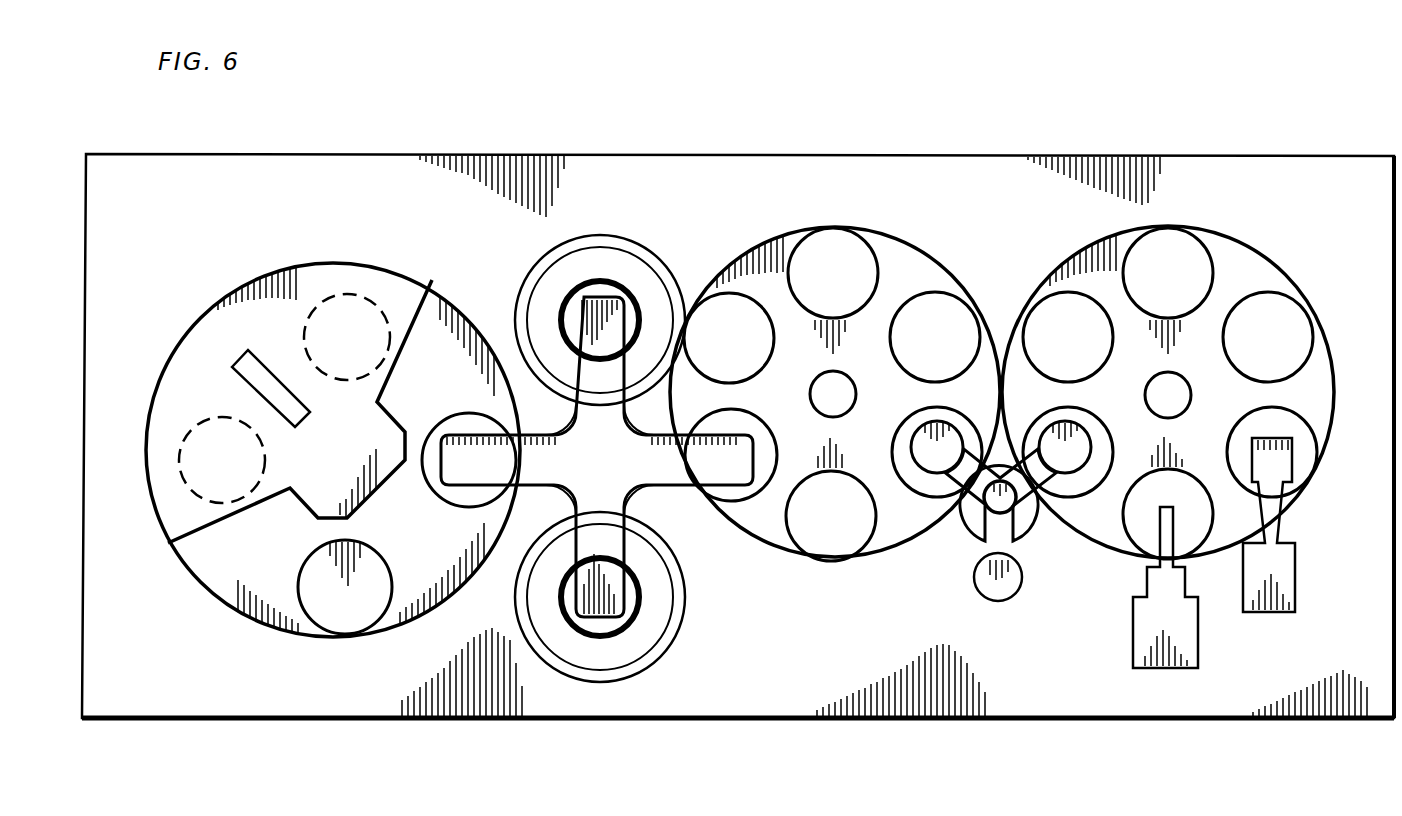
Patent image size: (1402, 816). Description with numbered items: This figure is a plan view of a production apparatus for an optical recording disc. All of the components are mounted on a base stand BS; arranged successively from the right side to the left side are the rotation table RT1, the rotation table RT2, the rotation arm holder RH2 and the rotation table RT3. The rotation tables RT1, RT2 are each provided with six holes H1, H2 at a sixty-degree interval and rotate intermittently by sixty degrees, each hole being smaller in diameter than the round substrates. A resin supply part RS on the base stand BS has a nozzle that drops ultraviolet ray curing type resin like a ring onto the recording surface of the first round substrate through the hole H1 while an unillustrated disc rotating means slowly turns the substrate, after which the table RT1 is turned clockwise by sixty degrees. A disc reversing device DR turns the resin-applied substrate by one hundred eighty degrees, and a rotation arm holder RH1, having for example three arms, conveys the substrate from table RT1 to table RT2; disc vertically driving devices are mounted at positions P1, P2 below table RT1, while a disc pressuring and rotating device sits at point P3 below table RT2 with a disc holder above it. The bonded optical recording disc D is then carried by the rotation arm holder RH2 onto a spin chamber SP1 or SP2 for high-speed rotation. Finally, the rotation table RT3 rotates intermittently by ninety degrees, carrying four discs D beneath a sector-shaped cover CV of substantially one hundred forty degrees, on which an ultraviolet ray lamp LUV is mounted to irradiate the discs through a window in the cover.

The base stand BS is at (788, 695).
The rotation table RT1 is at (1253, 265).
The rotation table RT2 is at (908, 262).
The rotation table RT3 is at (235, 585).
The hole H1 is at (1303, 357).
The hole H2 is at (804, 248).
The position P1 is at (1065, 454).
The position P2 is at (934, 454).
The point P3 is at (828, 514).
The spin chamber SP1 is at (623, 263).
The spin chamber SP2 is at (643, 628).
The rotation arm holder RH1 is at (995, 595).
The rotation arm holder RH2 is at (597, 620).
The cover CV is at (313, 278).
The ultraviolet ray lamp LUV is at (247, 367).
The optical recording disc D is at (343, 602).
The disc reversing device DR is at (1155, 670).
The resin supply part RS is at (1267, 615).